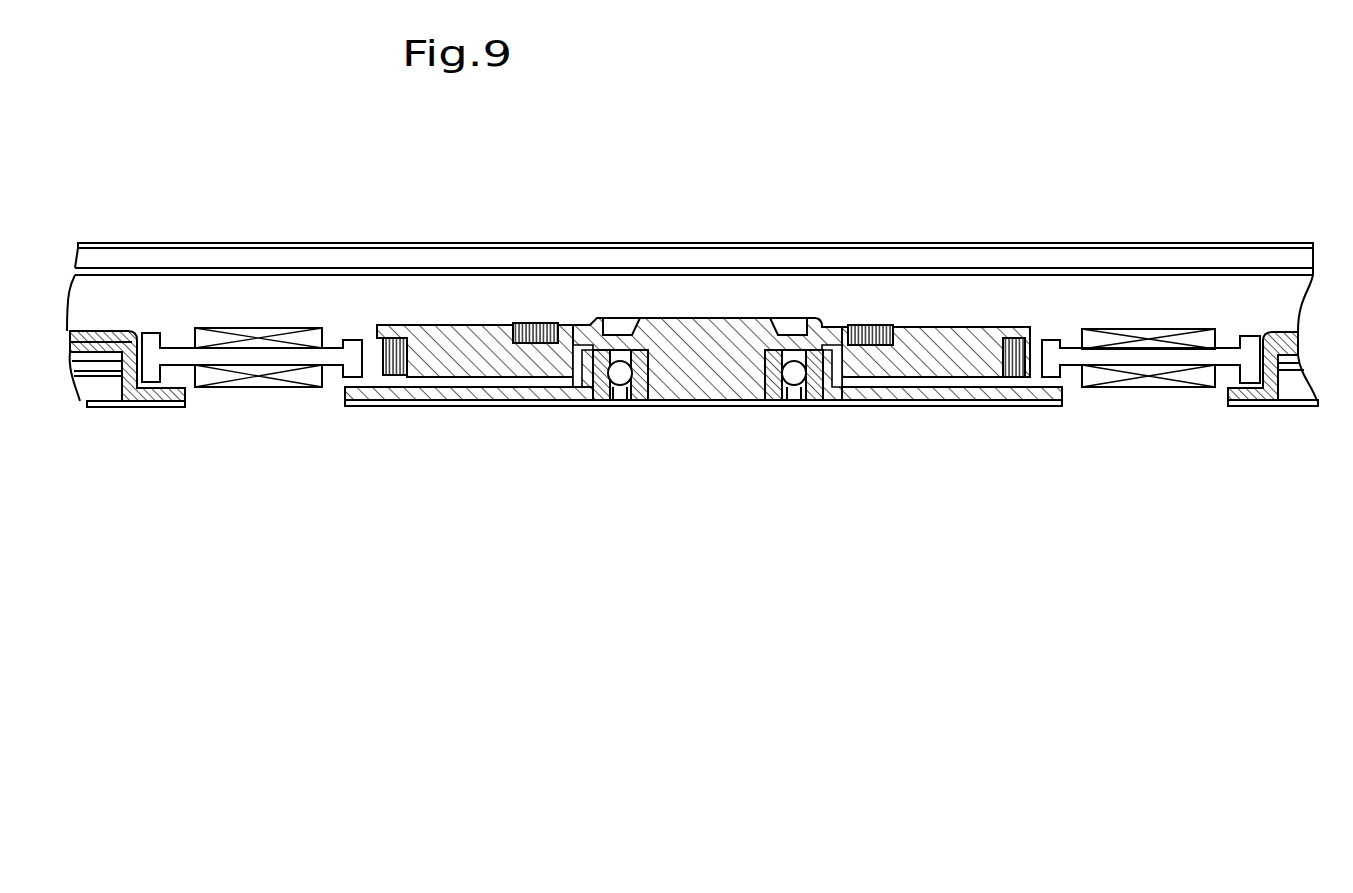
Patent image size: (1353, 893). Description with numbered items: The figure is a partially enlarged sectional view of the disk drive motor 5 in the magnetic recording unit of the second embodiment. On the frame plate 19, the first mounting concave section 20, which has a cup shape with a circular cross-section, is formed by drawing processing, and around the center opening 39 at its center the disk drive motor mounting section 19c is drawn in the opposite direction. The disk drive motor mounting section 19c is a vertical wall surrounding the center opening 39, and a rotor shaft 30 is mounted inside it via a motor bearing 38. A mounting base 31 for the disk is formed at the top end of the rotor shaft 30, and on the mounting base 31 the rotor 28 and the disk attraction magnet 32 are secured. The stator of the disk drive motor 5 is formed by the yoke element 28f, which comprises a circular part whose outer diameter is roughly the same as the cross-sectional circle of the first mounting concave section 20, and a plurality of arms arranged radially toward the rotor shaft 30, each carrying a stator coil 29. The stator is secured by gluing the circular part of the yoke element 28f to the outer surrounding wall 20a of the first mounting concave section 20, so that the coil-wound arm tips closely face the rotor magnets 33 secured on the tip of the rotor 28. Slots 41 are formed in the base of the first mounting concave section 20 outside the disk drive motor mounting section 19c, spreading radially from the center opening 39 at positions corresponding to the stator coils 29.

The disk drive motor 5 is at (769, 300).
The frame plate 19 is at (72, 327).
The disk drive motor mounting section 19c is at (843, 380).
The first mounting concave section 20 is at (1023, 393).
The outer surrounding wall 20a is at (118, 392).
The rotor 28 is at (443, 347).
The yoke element 28f is at (170, 357).
The stator coil 29 is at (268, 388).
The rotor shaft 30 is at (703, 372).
The mounting base 31 is at (825, 332).
The disk attraction magnet 32 is at (878, 330).
The rotor magnets 33 is at (398, 372).
The motor bearing 38 is at (620, 392).
The center opening 39 is at (594, 392).
The slots 41 is at (340, 392).